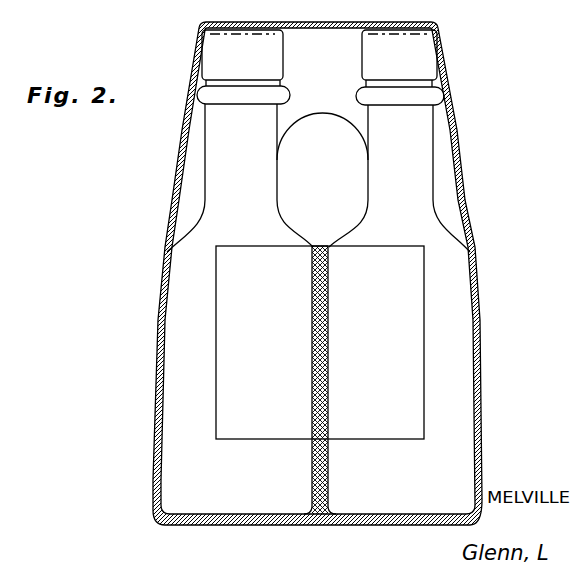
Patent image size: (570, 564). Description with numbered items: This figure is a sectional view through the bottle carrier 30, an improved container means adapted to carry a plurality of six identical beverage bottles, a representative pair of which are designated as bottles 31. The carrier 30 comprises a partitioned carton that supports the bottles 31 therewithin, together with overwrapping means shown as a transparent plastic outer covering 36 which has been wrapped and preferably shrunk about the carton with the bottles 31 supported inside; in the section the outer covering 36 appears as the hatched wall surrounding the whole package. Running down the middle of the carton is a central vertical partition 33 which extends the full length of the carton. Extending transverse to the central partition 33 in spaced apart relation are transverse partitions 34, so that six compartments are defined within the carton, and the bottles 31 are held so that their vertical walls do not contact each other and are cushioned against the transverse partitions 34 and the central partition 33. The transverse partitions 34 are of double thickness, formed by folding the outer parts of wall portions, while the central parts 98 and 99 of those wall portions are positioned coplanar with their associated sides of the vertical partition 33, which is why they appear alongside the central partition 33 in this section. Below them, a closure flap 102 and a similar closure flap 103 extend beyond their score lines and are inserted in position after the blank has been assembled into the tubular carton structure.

The bottle carrier 30 is at (548, 124).
The bottle 31 is at (378, 174).
The central vertical partition 33 is at (318, 247).
The transverse partition 34 is at (232, 346).
The transparent plastic outer covering 36 is at (465, 170).
The central part of wall portion 98 is at (312, 276).
The central part of wall portion 99 is at (330, 293).
The closure flap 102 is at (312, 468).
The closure flap 103 is at (330, 474).